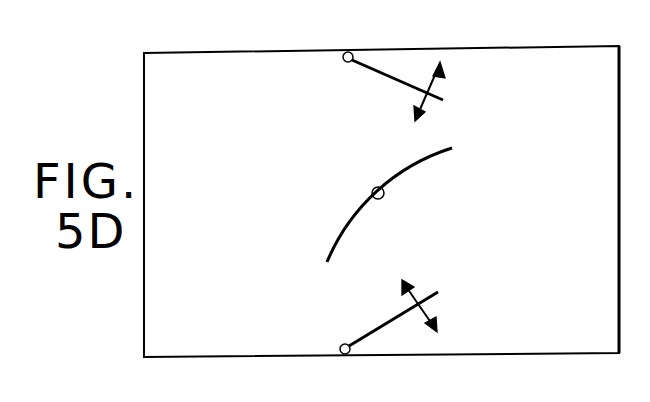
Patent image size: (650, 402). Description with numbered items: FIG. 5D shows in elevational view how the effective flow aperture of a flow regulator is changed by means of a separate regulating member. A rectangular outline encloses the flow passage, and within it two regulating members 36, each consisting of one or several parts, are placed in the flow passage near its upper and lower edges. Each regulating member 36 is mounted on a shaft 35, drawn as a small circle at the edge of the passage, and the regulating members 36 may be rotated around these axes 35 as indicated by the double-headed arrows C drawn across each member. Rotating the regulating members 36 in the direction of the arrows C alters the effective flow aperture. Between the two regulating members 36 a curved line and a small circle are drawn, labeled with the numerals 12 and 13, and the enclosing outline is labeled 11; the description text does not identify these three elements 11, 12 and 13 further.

The vehicle body panel 11 is at (309, 51).
The curved weld line 12 is at (440, 154).
The weld spot 13 is at (372, 192).
The shaft 35 is at (343, 59).
The regulating member 36 is at (392, 77).
The arrows C is at (437, 86).